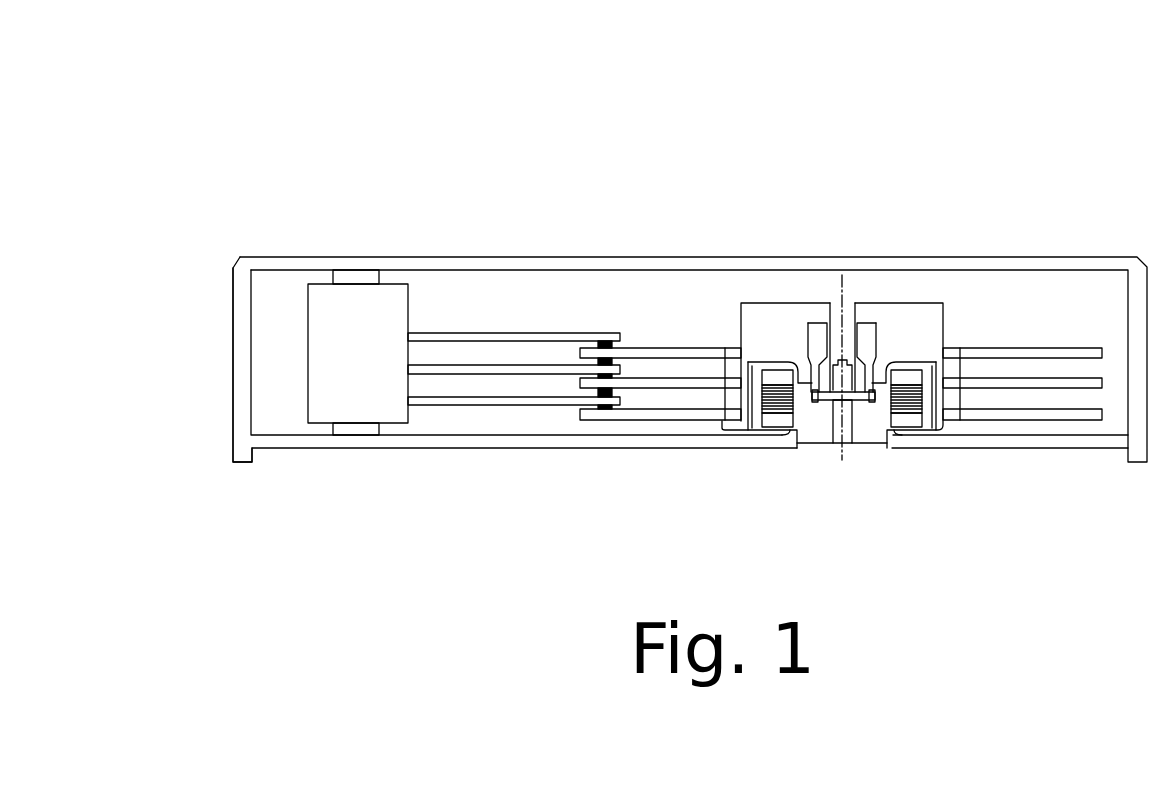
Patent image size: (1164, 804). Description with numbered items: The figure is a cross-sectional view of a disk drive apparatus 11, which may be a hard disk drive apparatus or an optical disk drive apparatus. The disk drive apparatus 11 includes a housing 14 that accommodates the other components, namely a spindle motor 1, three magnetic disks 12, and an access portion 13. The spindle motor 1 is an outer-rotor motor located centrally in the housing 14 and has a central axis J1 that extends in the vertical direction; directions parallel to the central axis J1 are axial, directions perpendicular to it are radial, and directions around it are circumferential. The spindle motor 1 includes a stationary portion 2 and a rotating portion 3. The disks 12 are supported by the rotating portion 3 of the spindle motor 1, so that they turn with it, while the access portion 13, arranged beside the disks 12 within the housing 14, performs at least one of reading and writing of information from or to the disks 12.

The disk drive apparatus 11 is at (320, 62).
The housing 14 is at (242, 447).
The access portion 13 is at (443, 402).
The magnetic disks 12 is at (1033, 354).
The rotating portion 3 is at (765, 310).
The stationary portion 2 is at (810, 423).
The spindle motor 1 is at (952, 297).
The central axis J1 is at (843, 297).